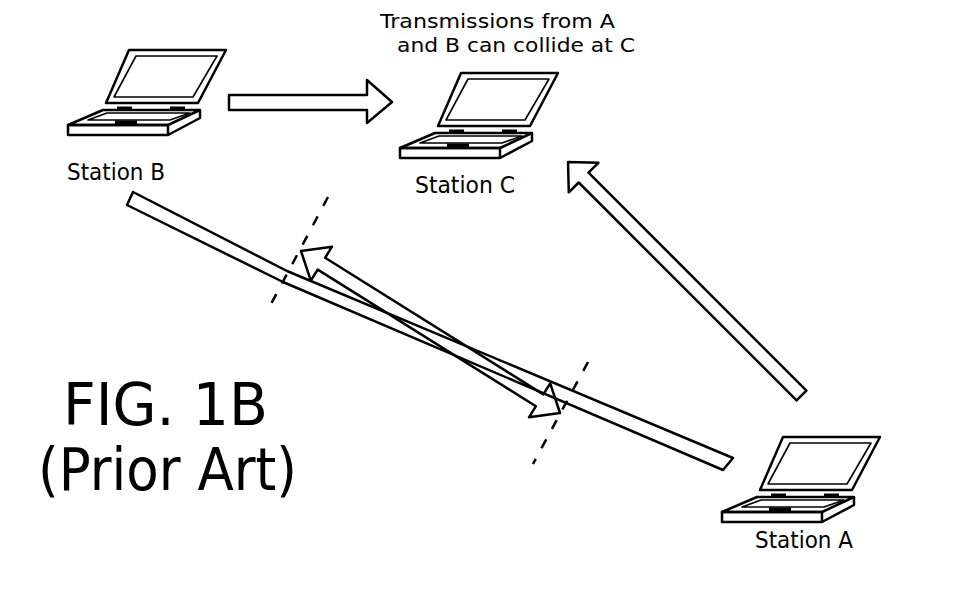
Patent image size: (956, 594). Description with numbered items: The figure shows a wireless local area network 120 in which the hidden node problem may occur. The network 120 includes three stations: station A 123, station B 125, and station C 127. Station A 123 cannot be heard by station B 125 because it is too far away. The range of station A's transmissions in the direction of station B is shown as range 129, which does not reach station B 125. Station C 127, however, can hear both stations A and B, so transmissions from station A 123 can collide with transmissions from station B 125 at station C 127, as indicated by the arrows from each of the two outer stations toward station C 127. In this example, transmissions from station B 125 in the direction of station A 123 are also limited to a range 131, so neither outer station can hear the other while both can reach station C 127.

The network 120 is at (676, 126).
The station A 123 is at (772, 451).
The station B 125 is at (219, 71).
The station C 127 is at (547, 108).
The range of station A's transmissions 129 is at (308, 237).
The range of station B's transmissions 131 is at (534, 461).